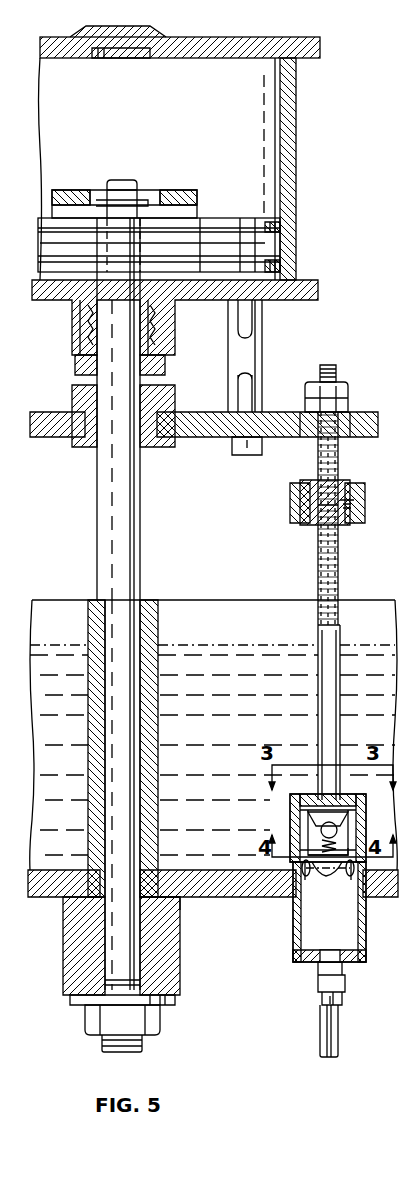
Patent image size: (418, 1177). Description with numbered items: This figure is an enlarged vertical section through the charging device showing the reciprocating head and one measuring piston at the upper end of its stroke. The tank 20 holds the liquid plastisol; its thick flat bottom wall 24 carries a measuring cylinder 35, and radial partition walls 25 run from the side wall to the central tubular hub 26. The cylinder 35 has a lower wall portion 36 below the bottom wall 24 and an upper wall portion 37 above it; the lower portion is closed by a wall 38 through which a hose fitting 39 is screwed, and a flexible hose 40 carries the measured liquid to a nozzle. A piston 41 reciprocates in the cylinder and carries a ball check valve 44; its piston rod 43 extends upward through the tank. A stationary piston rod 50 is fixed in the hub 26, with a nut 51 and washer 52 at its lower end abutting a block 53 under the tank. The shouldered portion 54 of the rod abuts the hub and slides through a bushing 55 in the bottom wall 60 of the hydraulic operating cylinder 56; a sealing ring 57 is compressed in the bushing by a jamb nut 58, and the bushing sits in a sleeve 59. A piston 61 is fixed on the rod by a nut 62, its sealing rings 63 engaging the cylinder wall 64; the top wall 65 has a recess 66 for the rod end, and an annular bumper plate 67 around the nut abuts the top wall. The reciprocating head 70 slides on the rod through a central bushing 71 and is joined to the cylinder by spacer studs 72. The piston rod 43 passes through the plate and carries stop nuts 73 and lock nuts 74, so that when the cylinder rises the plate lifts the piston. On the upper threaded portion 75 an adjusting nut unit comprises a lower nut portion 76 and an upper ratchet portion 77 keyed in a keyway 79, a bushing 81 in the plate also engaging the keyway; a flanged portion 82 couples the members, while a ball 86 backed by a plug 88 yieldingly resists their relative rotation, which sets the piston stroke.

The tank 20 is at (236, 890).
The bottom wall 24 is at (188, 880).
The partition walls 25 is at (64, 608).
The tubular hub 26 is at (150, 610).
The measuring cylinder 35 is at (282, 802).
The cylindrical wall portion 36 is at (366, 928).
The wall portion 37 is at (366, 800).
The wall 38 is at (308, 962).
The hose fitting 39 is at (344, 978).
The flexible hose 40 is at (336, 1048).
The piston 41 is at (300, 822).
The piston rod 43 is at (320, 636).
The ball check valve 44 is at (350, 822).
The stationary piston rod 50 is at (130, 690).
The nut 51 is at (150, 1028).
The washer 52 is at (165, 1000).
The block 53 is at (168, 965).
The shouldered portion 54 is at (134, 505).
The bushing 55 is at (175, 335).
The hydraulic operating cylinder 56 is at (300, 164).
The sealing ring 57 is at (80, 315).
The jamb nut 58 is at (165, 368).
The sleeve 59 is at (76, 350).
The bottom wall 60 is at (318, 292).
The piston 61 is at (272, 251).
The nut 62 is at (138, 200).
The sealing rings 63 is at (282, 232).
The wall 64 is at (290, 130).
The top wall 65 is at (318, 40).
The recess 66 is at (160, 37).
The annular bumper plate 67 is at (74, 190).
The reciprocating head 70 is at (42, 437).
The central bushing 71 is at (175, 410).
The spacer studs 72 is at (250, 365).
The stop nuts 73 is at (348, 405).
The lock nuts 74 is at (336, 376).
The upper threaded portion 75 is at (338, 462).
The lower nut portion 76 is at (300, 515).
The upper ratchet portion 77 is at (292, 494).
The keyway 79 is at (336, 560).
The bushing 81 is at (340, 432).
The annular flanged portion 82 is at (304, 528).
The ball 86 is at (362, 502).
The plug 88 is at (350, 516).